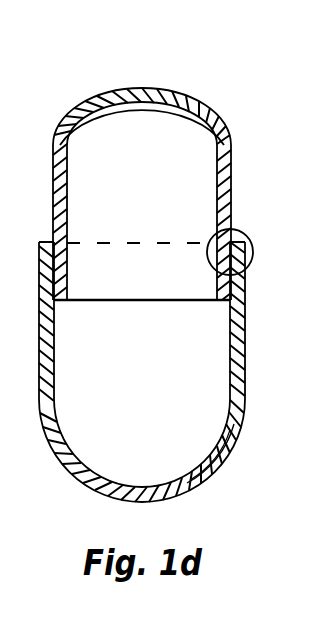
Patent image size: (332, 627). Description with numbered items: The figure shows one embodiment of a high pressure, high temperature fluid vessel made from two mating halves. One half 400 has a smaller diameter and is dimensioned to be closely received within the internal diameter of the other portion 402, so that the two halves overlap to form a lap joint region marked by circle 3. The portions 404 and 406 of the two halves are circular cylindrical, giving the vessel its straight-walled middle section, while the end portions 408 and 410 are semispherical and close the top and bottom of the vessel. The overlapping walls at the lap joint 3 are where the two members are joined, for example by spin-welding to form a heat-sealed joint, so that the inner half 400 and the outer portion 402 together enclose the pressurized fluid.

The lap joint region 3 is at (244, 234).
The half 400 is at (174, 177).
The portion 402 is at (170, 372).
The portion 404 is at (67, 203).
The portion 406 is at (54, 365).
The end portion 408 is at (183, 95).
The end portion 410 is at (200, 478).